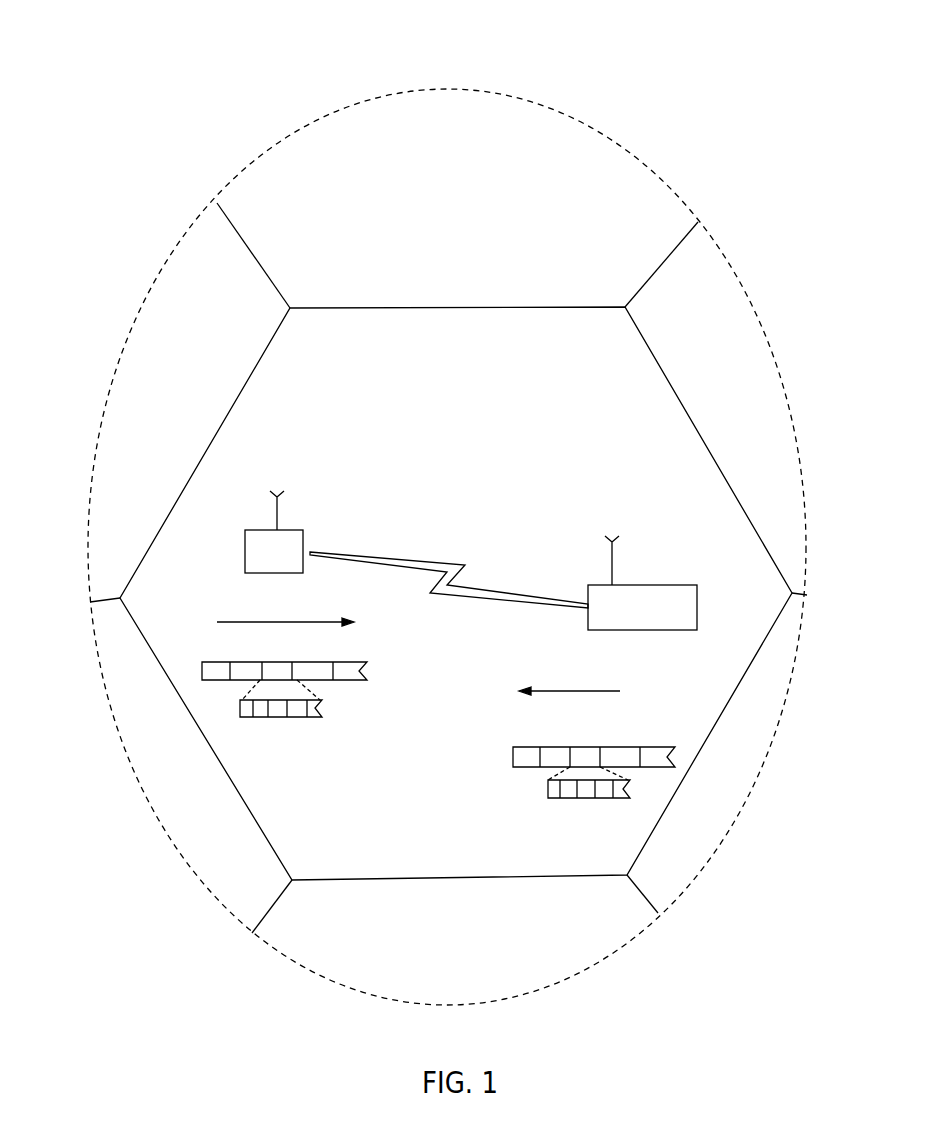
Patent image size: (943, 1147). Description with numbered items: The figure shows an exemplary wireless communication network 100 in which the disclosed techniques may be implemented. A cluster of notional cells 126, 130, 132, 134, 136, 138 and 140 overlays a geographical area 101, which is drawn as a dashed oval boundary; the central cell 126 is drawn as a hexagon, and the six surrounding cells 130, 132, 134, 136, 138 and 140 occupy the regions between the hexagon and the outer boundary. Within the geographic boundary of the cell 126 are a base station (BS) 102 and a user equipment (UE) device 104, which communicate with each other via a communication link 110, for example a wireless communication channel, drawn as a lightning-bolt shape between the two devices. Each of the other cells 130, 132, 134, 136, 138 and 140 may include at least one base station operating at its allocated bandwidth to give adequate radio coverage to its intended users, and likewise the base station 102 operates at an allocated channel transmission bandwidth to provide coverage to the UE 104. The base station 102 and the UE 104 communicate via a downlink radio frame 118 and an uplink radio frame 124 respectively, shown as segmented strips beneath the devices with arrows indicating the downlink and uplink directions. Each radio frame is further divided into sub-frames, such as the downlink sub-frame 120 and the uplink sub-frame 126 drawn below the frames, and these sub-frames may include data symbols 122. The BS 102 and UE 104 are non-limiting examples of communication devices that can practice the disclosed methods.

The wireless communication network 100 is at (398, 50).
The geographical area 101 is at (590, 115).
The base station 102 is at (245, 547).
The user equipment device 104 is at (667, 583).
The communication link 110 is at (445, 557).
The downlink radio frame 118 is at (202, 672).
The sub-frame 120 is at (240, 707).
The data symbol 122 is at (292, 707).
The uplink radio frame 124 is at (648, 742).
The cell 126 is at (325, 372).
The cell 130 is at (177, 268).
The cell 132 is at (305, 150).
The cell 134 is at (717, 297).
The cell 136 is at (688, 857).
The cell 138 is at (337, 948).
The cell 140 is at (178, 822).